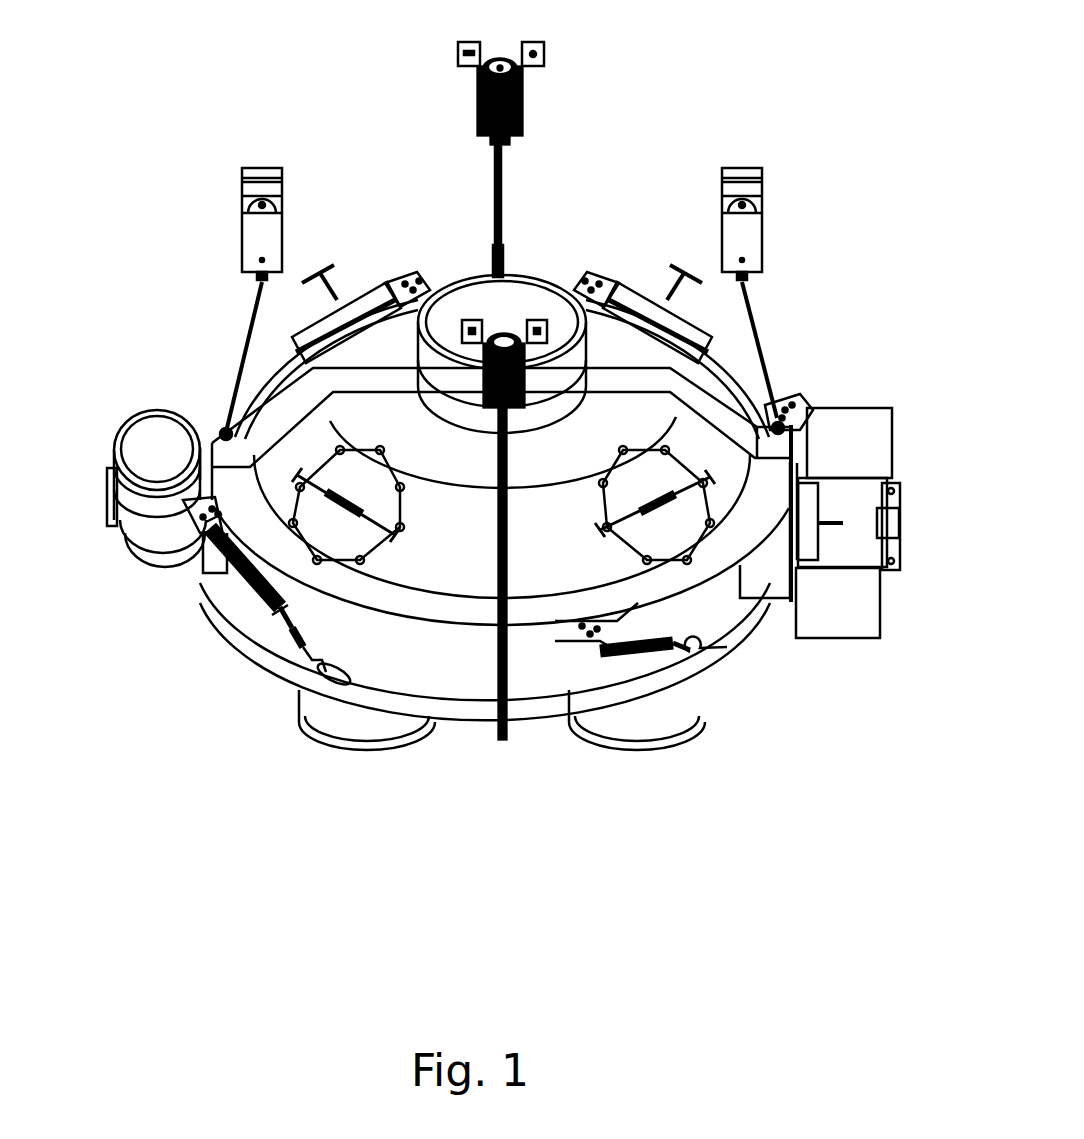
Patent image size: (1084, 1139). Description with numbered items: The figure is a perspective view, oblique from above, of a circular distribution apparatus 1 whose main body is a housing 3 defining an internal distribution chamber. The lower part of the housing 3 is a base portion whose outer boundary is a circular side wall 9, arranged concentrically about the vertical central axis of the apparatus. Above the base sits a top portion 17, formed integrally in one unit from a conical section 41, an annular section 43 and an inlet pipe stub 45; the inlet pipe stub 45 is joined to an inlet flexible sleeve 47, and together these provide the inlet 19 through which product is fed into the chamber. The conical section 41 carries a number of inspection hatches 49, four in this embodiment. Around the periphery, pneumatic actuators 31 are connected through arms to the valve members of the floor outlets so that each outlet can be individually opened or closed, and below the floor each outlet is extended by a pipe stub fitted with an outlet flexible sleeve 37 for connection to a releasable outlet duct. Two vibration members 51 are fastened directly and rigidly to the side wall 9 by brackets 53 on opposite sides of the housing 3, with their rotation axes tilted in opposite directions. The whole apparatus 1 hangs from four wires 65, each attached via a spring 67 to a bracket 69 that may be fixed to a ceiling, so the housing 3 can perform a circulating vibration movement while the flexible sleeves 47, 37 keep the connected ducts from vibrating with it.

The circular distribution apparatus 1 is at (866, 280).
The housing 3 is at (716, 466).
The side wall 9 is at (707, 607).
The top portion 17 is at (614, 347).
The inlet 19 is at (529, 279).
The pneumatic actuator 31 is at (243, 585).
The outlet flexible sleeve 37 is at (327, 740).
The conical section 41 is at (471, 562).
The annular section 43 is at (592, 452).
The inlet pipe stub 45 is at (460, 418).
The inlet flexible sleeve 47 is at (458, 283).
The inspection hatch 49 is at (678, 537).
The vibration member 51 is at (120, 430).
The bracket 53 is at (767, 583).
The wire 65 is at (495, 210).
The spring 67 is at (480, 115).
The bracket 69 is at (456, 50).